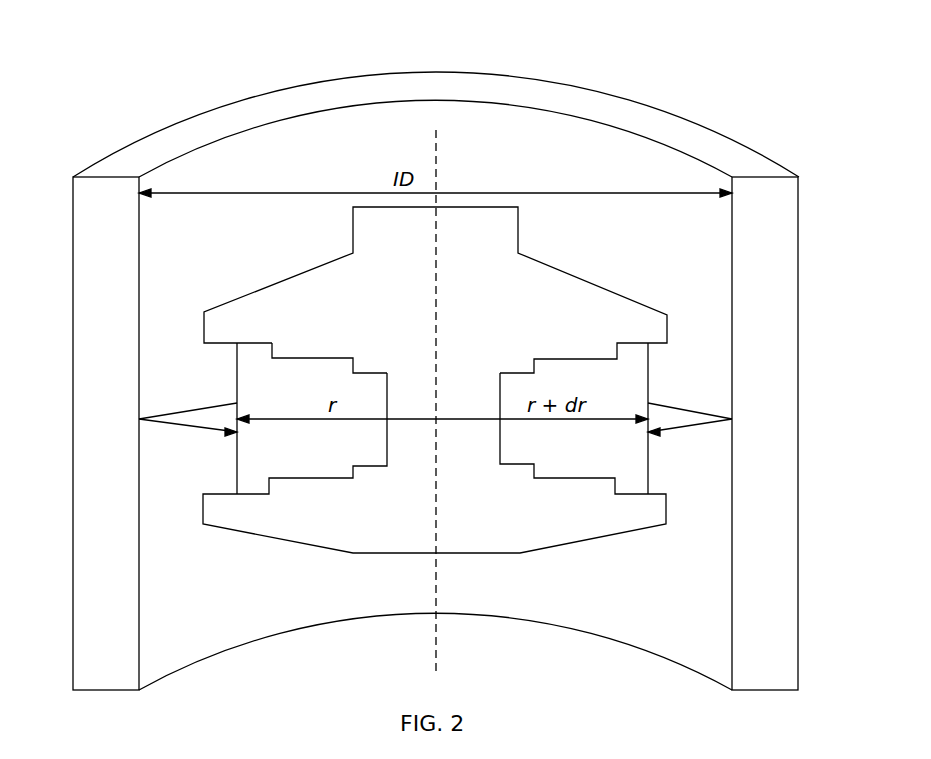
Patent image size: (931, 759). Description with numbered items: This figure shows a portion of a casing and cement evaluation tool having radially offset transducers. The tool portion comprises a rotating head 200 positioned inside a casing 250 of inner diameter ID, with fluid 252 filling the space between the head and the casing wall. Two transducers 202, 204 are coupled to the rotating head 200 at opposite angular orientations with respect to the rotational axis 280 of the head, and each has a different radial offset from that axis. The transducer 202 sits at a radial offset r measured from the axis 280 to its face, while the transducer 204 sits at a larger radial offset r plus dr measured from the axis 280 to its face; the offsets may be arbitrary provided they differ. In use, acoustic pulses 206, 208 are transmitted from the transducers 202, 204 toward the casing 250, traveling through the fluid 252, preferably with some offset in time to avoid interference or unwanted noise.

The rotating head 200 is at (428, 393).
The transducer 202 is at (287, 357).
The transducer 204 is at (583, 465).
The acoustic pulse 206 is at (185, 427).
The acoustic pulse 208 is at (698, 425).
The casing 250 is at (170, 123).
The fluid 252 is at (593, 155).
The rotational axis 280 is at (436, 130).